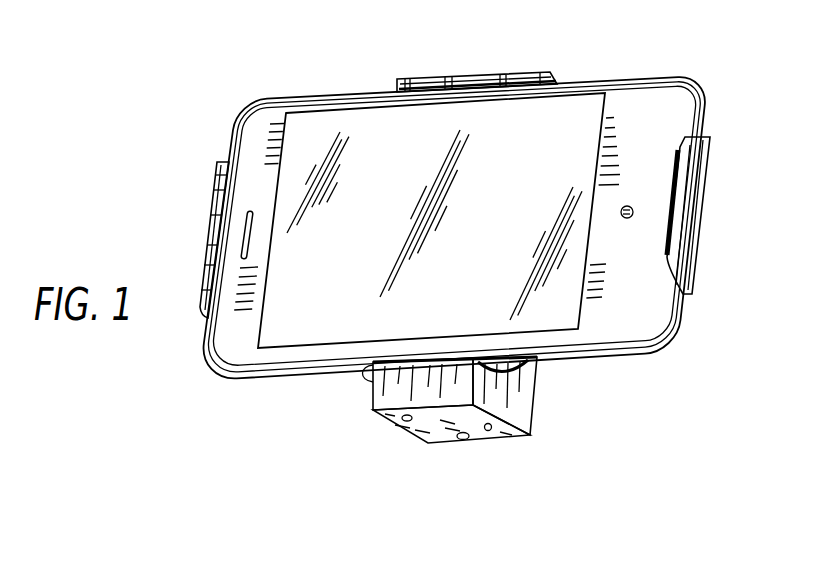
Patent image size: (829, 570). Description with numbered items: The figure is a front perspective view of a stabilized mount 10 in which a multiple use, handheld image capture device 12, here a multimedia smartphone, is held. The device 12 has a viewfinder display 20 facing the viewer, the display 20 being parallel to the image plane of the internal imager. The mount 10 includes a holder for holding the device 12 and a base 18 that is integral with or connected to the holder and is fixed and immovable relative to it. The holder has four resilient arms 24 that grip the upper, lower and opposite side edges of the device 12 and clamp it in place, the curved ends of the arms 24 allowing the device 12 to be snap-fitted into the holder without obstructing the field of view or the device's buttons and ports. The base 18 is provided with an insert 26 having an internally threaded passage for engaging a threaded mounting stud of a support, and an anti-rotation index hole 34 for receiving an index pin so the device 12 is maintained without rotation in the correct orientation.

The stabilized mount 10 is at (338, 426).
The image capture device 12 is at (639, 365).
The base 18 is at (546, 407).
The viewfinder display 20 is at (337, 118).
The arms 24 is at (493, 73).
The insert 26 is at (465, 440).
The anti-rotation index hole 34 is at (420, 419).